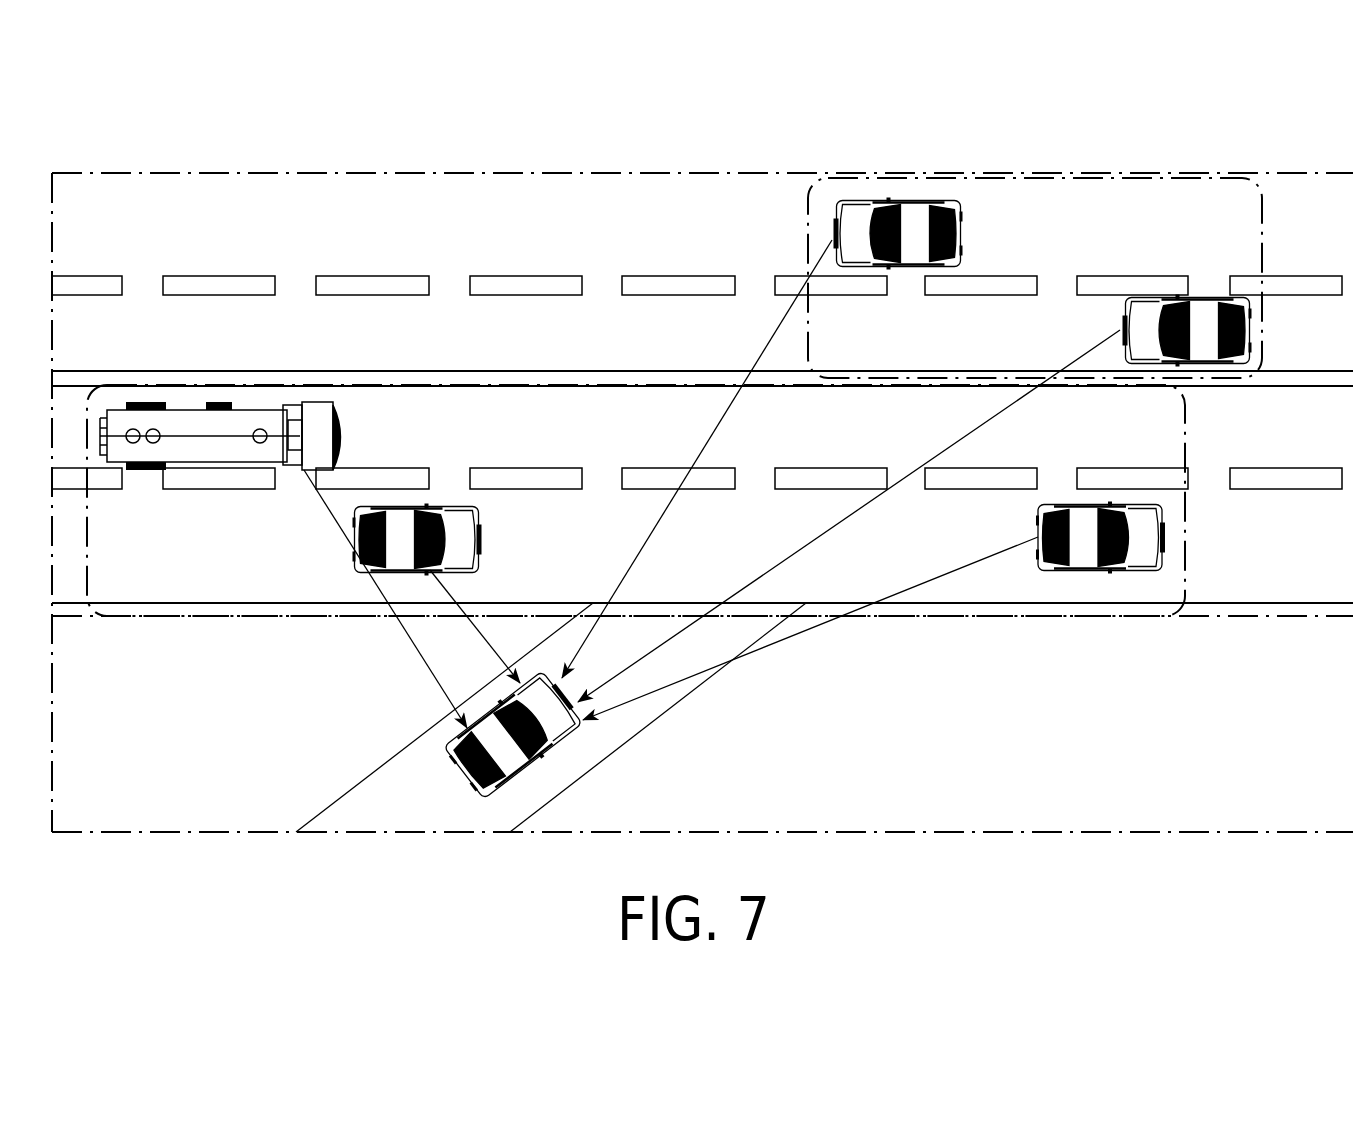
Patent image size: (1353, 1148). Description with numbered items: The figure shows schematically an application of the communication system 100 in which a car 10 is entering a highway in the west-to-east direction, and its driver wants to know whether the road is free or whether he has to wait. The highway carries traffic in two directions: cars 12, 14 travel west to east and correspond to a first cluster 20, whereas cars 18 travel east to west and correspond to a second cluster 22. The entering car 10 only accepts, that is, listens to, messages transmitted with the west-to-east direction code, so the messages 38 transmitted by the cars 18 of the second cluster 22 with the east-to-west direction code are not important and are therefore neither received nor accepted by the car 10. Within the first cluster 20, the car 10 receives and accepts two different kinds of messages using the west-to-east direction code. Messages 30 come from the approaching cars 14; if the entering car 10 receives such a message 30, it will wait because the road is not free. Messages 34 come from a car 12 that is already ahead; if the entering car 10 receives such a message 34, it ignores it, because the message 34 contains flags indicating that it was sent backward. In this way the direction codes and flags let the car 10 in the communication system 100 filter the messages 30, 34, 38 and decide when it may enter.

The communication system 100 is at (197, 133).
The car 10 is at (530, 750).
The car 12 is at (1140, 572).
The car 14 is at (320, 402).
The car 18 is at (883, 202).
The first cluster 20 is at (967, 617).
The second cluster 22 is at (1033, 178).
The message 30 is at (477, 635).
The message 34 is at (809, 628).
The message 38 is at (763, 345).